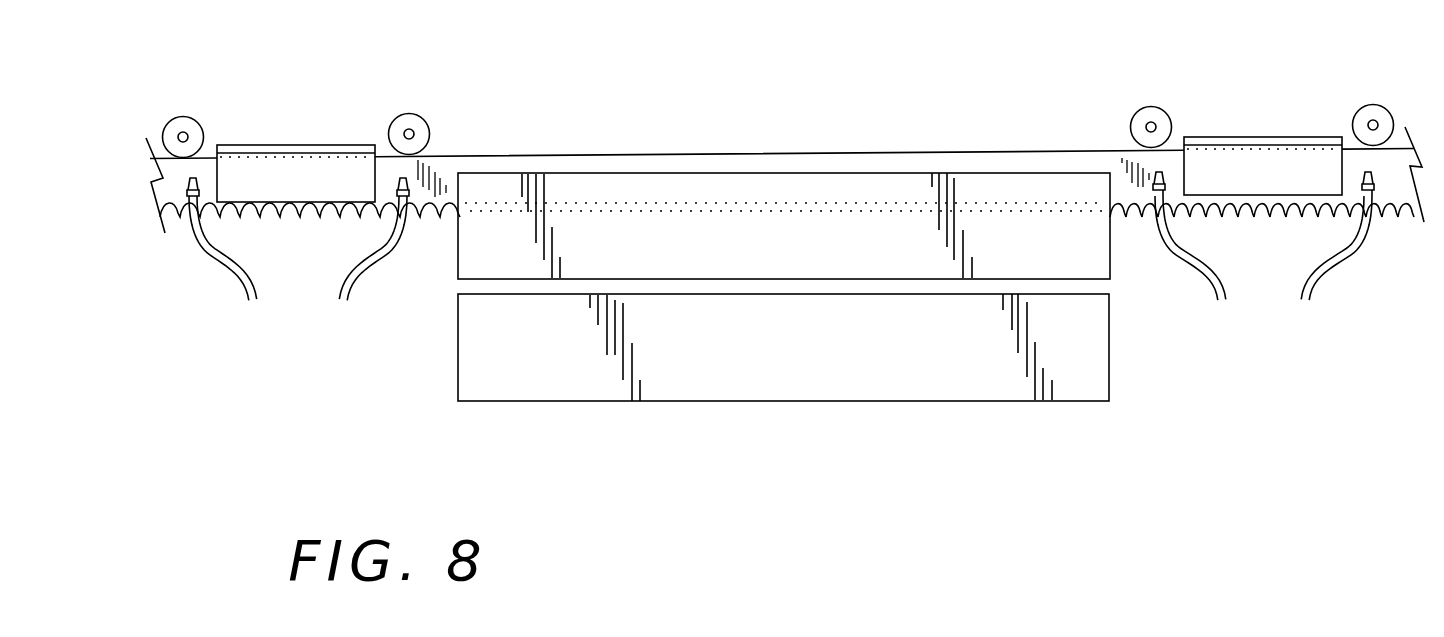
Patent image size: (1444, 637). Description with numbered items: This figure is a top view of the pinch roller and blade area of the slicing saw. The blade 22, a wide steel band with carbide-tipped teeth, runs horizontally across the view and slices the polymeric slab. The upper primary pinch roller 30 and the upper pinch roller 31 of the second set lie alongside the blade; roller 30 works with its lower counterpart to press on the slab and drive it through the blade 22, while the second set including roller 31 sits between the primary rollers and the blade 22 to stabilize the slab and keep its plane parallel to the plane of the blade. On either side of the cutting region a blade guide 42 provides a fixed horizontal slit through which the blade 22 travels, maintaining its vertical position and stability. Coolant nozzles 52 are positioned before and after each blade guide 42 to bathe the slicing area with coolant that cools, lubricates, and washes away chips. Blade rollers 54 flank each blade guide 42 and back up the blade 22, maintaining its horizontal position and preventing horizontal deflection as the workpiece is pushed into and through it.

The blade 22 is at (655, 162).
The upper primary pinch roller 30 is at (728, 358).
The upper pinch roller of the second set 31 is at (835, 253).
The blade guide 42 is at (283, 190).
The coolant nozzle 52 is at (207, 247).
The blade roller 54 is at (180, 120).